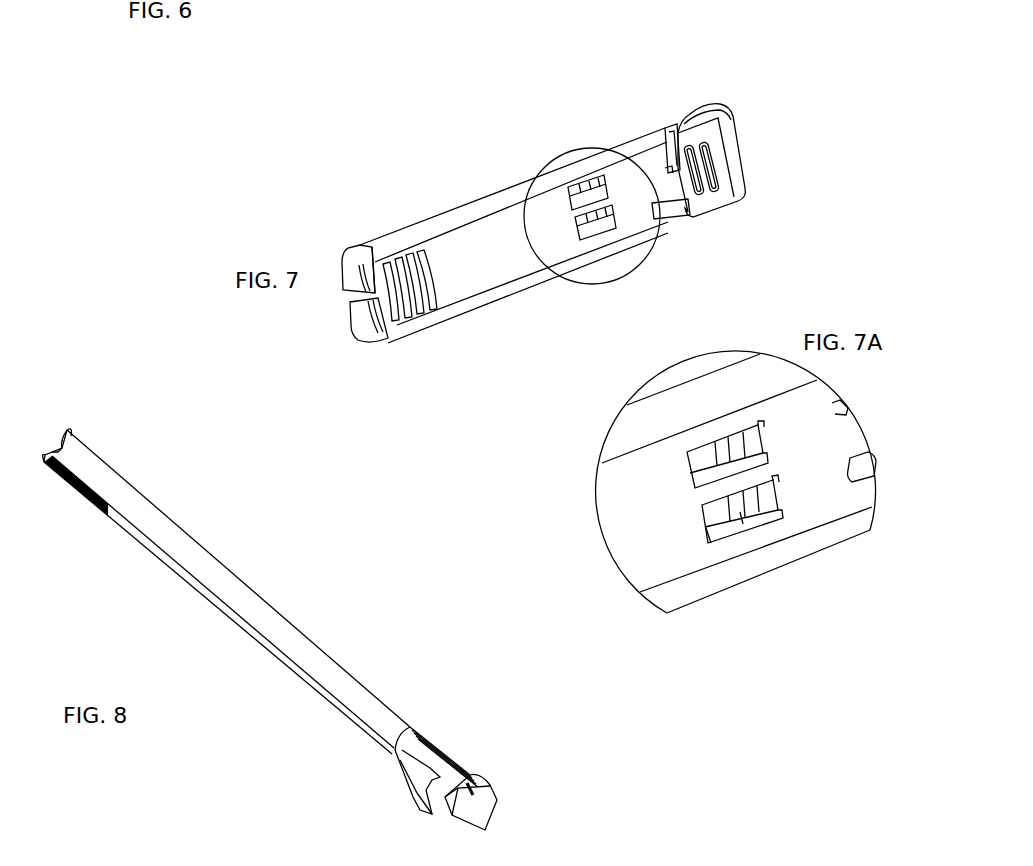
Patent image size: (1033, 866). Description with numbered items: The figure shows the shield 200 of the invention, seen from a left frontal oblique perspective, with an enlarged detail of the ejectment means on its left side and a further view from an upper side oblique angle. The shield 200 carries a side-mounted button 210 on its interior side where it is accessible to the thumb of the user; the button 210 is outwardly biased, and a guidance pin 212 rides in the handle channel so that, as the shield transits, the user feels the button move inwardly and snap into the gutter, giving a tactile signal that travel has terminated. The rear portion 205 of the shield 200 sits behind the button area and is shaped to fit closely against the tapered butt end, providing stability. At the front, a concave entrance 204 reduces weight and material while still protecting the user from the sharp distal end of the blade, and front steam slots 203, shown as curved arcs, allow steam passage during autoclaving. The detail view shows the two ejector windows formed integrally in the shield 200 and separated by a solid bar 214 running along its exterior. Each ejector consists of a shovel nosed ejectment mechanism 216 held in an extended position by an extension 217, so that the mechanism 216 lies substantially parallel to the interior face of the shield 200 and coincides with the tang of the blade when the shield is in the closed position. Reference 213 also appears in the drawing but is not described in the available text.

In FIG. 7, the shield 200 is at (450, 195).
In FIG. 8, the shield 200 is at (203, 553).
In FIG. 7, the front steam slots 203 is at (437, 303).
In FIG. 7, the concave entrance 204 is at (367, 238).
In FIG. 8, the concave entrance 204 is at (60, 440).
In FIG. 7, the rear portion 205 is at (735, 143).
In FIG. 8, the rear portion 205 is at (478, 782).
In FIG. 7, the button 210 is at (684, 124).
In FIG. 8, the button 210 is at (410, 730).
In FIG. 8, the guidance pin 212 is at (450, 775).
In FIG. 7, the upper tab 213 is at (572, 185).
In FIG. 7A, the upper tab 213 is at (677, 443).
In FIG. 7A, the solid bar 214 is at (692, 489).
In FIG. 7A, the shovel nosed ejectment mechanism 216 is at (714, 527).
In FIG. 7A, the extension 217 is at (745, 523).